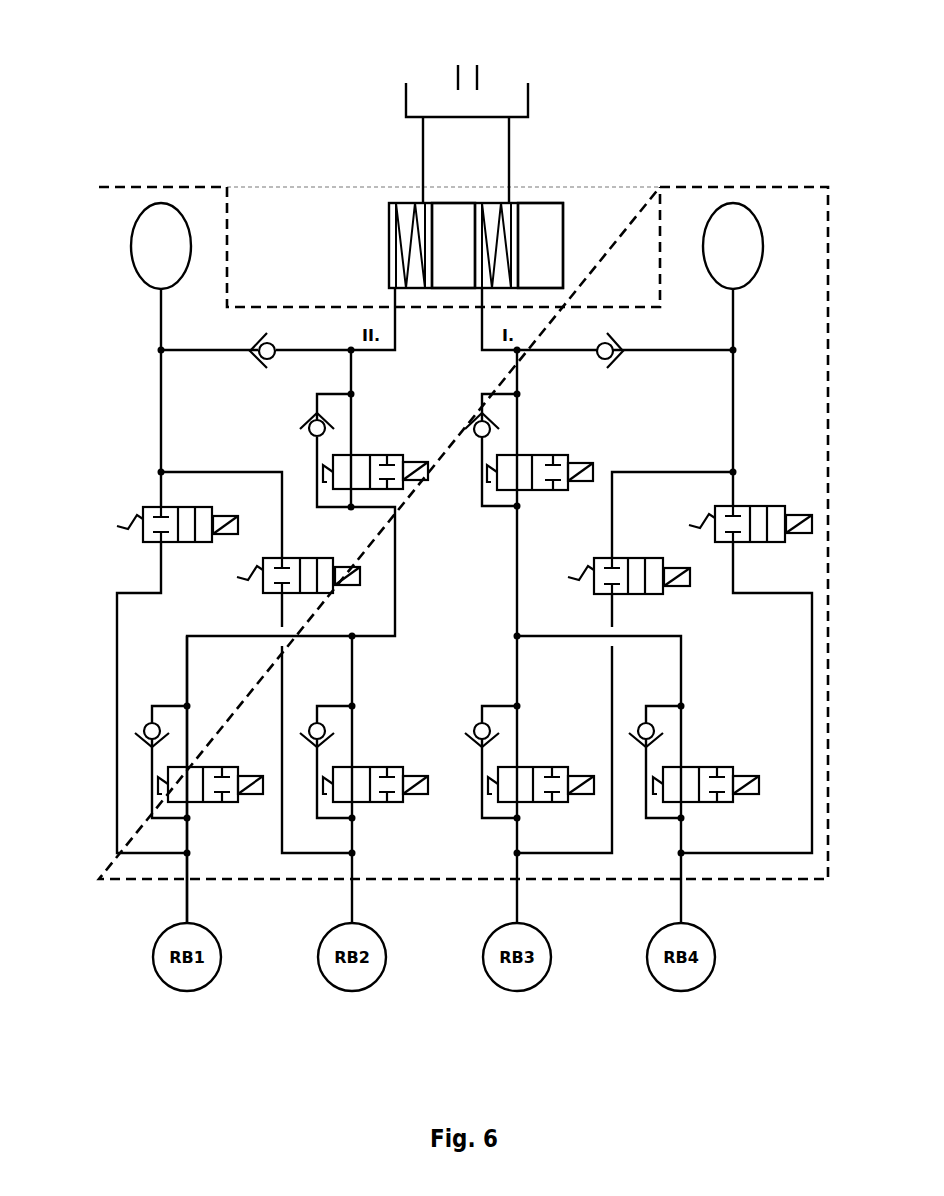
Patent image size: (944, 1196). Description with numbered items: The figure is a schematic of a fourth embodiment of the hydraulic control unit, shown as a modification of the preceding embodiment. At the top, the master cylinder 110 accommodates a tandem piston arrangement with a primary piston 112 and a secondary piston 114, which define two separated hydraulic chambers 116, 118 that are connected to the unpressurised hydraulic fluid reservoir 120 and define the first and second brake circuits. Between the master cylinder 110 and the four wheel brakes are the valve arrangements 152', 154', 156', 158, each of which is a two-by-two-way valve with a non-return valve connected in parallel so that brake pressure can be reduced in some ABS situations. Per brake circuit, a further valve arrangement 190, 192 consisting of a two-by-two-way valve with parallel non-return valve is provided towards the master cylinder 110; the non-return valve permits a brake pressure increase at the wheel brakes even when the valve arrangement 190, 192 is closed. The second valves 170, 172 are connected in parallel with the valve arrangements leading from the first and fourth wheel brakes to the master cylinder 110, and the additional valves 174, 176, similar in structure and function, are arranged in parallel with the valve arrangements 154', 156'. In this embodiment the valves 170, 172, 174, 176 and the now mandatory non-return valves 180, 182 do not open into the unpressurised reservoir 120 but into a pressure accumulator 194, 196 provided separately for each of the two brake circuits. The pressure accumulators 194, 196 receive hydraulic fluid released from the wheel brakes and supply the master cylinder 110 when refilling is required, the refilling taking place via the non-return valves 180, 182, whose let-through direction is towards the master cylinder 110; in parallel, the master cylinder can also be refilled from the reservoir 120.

The unpressurised hydraulic fluid reservoir 120 is at (502, 77).
The master cylinder 110 is at (588, 202).
The primary piston 112 is at (559, 264).
The secondary piston 114 is at (465, 264).
The hydraulic chamber 116 is at (502, 217).
The hydraulic chamber 118 is at (397, 247).
The pressure accumulator 194 is at (182, 213).
The pressure accumulator 196 is at (733, 203).
The non-return valve 180 is at (250, 351).
The non-return valve 182 is at (623, 351).
The valve arrangement 190 is at (395, 482).
The valve arrangement 192 is at (543, 483).
The second valve 170 is at (197, 542).
The second valve 172 is at (767, 505).
The additional valve 174 is at (307, 558).
The additional valve 176 is at (630, 558).
The valve arrangement 152' is at (210, 756).
The valve arrangement 154' is at (383, 756).
The valve arrangement 156' is at (542, 755).
The first valve 158 is at (717, 763).